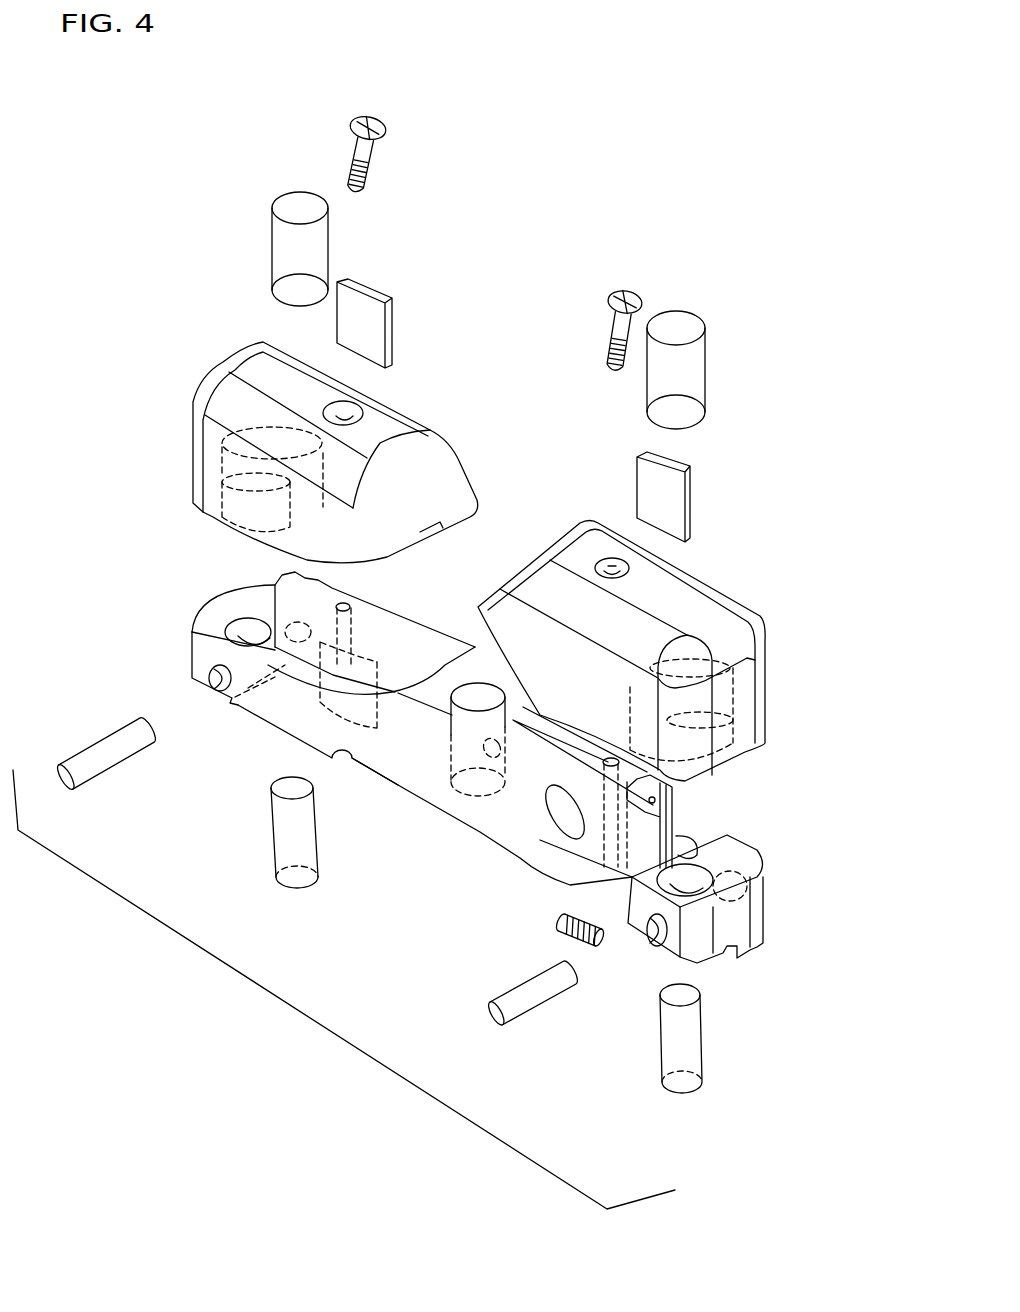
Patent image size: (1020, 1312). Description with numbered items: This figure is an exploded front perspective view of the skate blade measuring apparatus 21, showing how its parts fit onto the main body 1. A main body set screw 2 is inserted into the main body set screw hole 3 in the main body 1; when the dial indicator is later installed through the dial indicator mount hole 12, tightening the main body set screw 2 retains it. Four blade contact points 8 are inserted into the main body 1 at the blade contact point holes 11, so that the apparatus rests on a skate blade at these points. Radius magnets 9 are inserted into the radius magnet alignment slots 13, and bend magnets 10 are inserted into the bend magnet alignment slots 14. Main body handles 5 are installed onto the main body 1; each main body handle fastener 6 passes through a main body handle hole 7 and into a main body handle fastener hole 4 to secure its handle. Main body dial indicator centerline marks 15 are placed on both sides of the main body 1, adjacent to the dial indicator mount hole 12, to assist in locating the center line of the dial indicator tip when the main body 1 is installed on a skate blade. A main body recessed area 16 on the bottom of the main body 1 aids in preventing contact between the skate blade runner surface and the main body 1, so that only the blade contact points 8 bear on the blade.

The main body 1 is at (203, 648).
The main body set screw 2 is at (567, 930).
The main body set screw hole 3 is at (515, 785).
The main body handle fastener hole 4 is at (343, 613).
The main body handle 5 is at (203, 420).
The main body handle fastener 6 is at (353, 163).
The main body handle hole 7 is at (350, 417).
The blade contact point 8 is at (97, 752).
The radius magnet 9 is at (380, 333).
The bend magnet 10 is at (280, 265).
The blade contact point hole 11 is at (216, 677).
The dial indicator mount hole 12 is at (475, 688).
The radius magnet alignment slot 13 is at (345, 697).
The bend magnet alignment slot 14 is at (241, 628).
The main body dial indicator centerline marks 15 is at (437, 780).
The main body recessed area 16 is at (388, 780).
The blade measuring apparatus 21 is at (329, 1034).